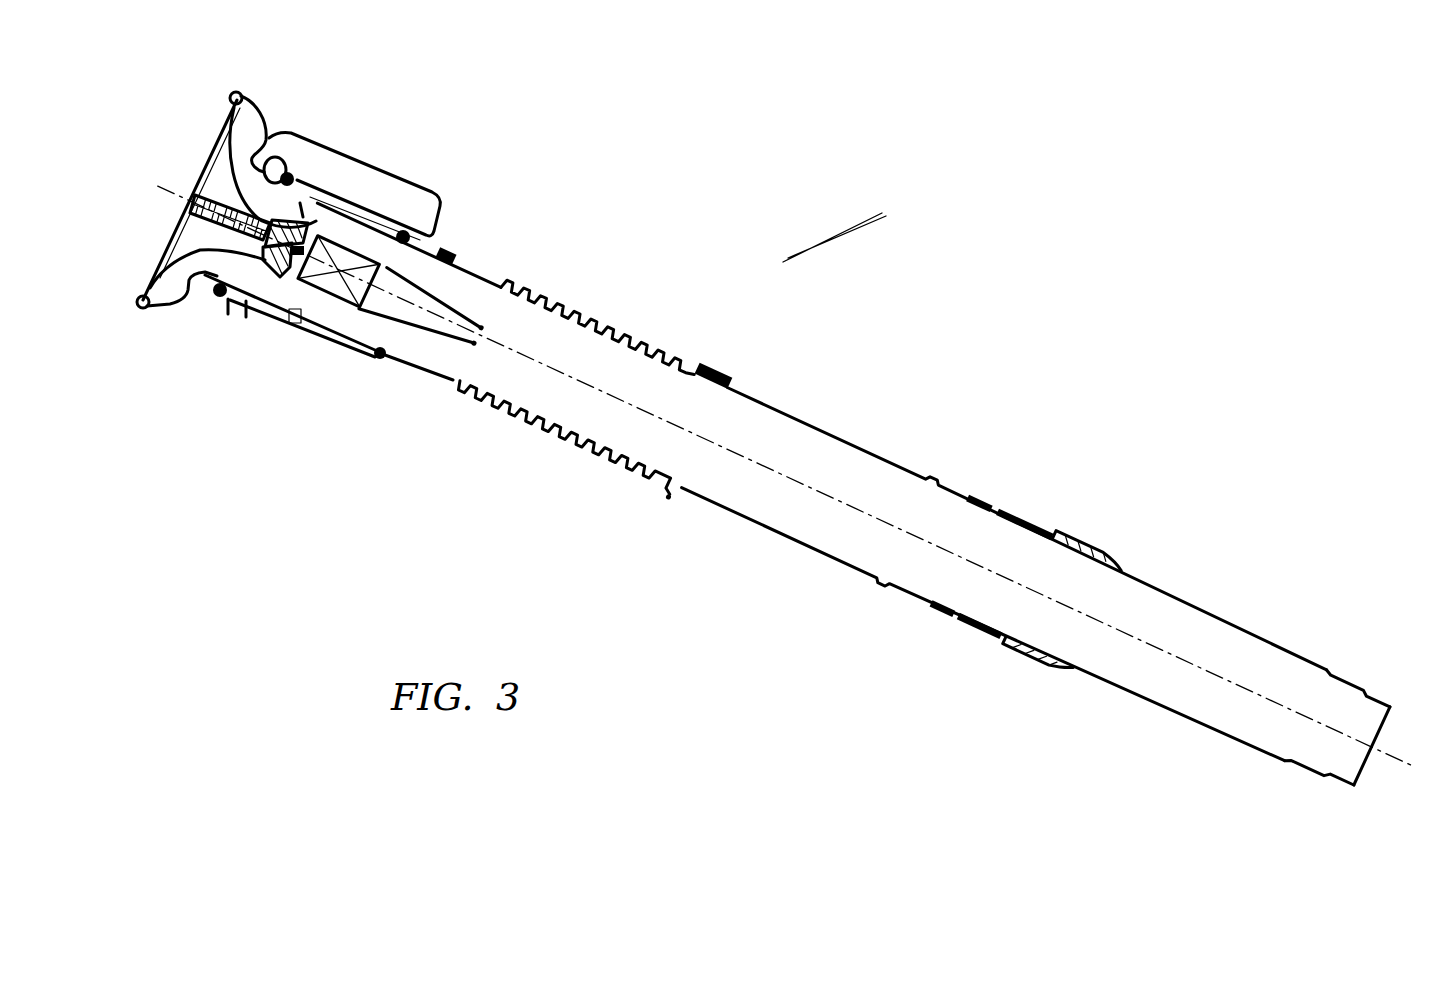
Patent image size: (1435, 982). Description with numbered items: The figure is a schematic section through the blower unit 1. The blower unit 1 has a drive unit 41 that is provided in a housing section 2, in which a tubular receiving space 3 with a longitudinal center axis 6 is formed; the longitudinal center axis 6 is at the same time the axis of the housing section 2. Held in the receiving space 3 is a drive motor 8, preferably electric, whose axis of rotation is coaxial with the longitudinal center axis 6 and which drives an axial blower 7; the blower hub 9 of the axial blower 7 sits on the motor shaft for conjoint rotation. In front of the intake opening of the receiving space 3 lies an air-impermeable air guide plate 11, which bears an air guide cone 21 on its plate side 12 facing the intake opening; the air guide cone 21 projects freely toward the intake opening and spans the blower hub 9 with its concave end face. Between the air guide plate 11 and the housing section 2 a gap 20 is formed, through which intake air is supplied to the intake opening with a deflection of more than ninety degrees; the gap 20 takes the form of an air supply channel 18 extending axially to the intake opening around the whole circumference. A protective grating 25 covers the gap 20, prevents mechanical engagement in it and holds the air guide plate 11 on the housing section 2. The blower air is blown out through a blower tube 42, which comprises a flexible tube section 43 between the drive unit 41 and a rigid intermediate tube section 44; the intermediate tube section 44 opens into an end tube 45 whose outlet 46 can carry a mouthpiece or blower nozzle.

The blower unit 1 is at (761, 286).
The housing section 2 is at (423, 243).
The receiving space 3 is at (330, 310).
The longitudinal center axis 6 is at (1112, 623).
The axial blower 7 is at (262, 274).
The drive motor 8 is at (323, 280).
The blower hub 9 is at (285, 272).
The air guide plate 11 is at (213, 173).
The plate side 12 is at (187, 232).
The air supply channel 18 is at (267, 192).
The gap 20 is at (243, 127).
The air guide cone 21 is at (233, 193).
The protective grating 25 is at (178, 303).
The drive unit 41 is at (358, 365).
The blower tube 42 is at (889, 444).
The flexible tube section 43 is at (507, 387).
The intermediate tube section 44 is at (877, 560).
The end tube 45 is at (1192, 693).
The outlet 46 is at (1375, 747).